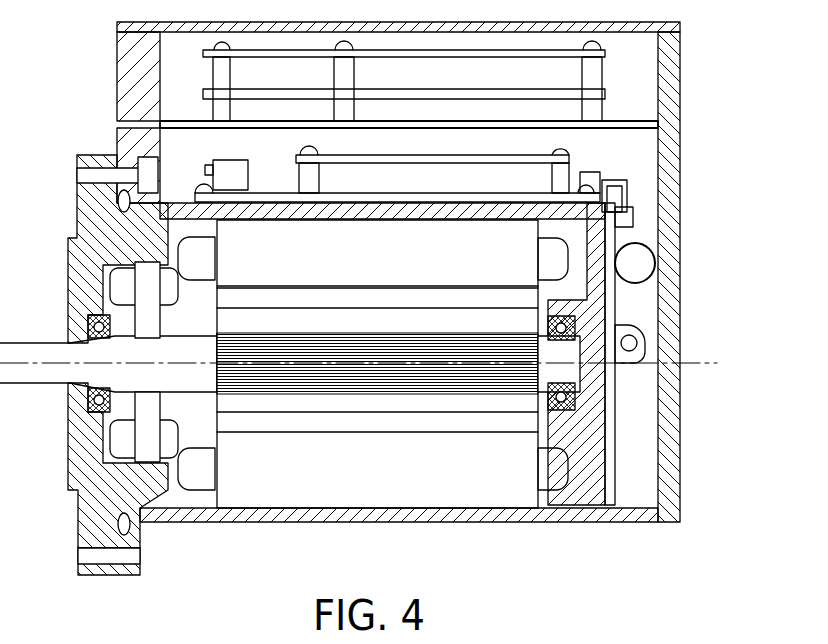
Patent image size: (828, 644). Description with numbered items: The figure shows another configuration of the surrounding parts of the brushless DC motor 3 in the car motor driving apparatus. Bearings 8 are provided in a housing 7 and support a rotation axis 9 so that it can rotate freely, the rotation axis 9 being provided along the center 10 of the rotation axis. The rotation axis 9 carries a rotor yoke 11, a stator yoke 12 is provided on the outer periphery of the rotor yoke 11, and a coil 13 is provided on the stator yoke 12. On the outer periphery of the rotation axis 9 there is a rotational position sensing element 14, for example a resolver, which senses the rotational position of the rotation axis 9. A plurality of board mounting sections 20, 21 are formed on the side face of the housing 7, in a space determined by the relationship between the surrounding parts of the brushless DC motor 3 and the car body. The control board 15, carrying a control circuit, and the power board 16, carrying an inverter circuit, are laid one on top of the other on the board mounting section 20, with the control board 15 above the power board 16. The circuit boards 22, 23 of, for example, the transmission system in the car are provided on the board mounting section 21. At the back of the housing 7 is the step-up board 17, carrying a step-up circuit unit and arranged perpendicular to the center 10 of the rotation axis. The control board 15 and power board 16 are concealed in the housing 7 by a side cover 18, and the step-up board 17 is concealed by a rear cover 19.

The brushless DC motor 3 is at (68, 262).
The housing 7 is at (68, 476).
The bearings 8 is at (86, 408).
The rotation axis 9 is at (22, 343).
The center of the rotation axis 10 is at (705, 361).
The rotor yoke 11 is at (443, 405).
The stator yoke 12 is at (290, 503).
The coil 13 is at (198, 282).
The rotational position sensing element 14 is at (157, 428).
The control board 15 is at (410, 155).
The power board 16 is at (275, 190).
The step-up board 17 is at (618, 303).
The side cover 18 is at (682, 24).
The rear cover 19 is at (682, 438).
The board mounting section 20 is at (688, 130).
The board mounting section 21 is at (688, 37).
The circuit board 22 is at (283, 89).
The circuit board 23 is at (462, 60).